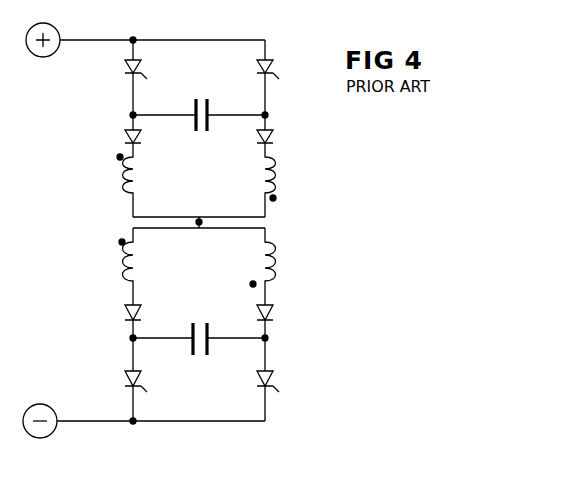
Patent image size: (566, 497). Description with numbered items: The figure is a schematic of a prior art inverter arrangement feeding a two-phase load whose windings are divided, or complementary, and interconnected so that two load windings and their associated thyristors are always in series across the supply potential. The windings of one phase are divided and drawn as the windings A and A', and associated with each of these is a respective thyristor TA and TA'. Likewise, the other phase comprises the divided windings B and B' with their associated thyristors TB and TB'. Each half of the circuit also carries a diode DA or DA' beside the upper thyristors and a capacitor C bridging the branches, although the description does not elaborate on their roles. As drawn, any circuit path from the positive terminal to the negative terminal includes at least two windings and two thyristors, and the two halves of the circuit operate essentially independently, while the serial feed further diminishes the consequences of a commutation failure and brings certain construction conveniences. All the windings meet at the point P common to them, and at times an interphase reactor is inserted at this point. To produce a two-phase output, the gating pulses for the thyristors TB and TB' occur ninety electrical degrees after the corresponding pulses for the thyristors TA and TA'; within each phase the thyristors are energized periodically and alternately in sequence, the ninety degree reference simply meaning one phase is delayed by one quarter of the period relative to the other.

The thyristor TA is at (146, 70).
The thyristor TA' is at (283, 70).
The diode DA is at (150, 145).
The diode DA' is at (286, 145).
The commutating capacitor C is at (199, 227).
The winding A is at (141, 183).
The winding A' is at (280, 182).
The point P is at (196, 209).
The winding B is at (140, 261).
The winding B' is at (275, 263).
The thyristor TB is at (150, 383).
The thyristor TB' is at (285, 383).